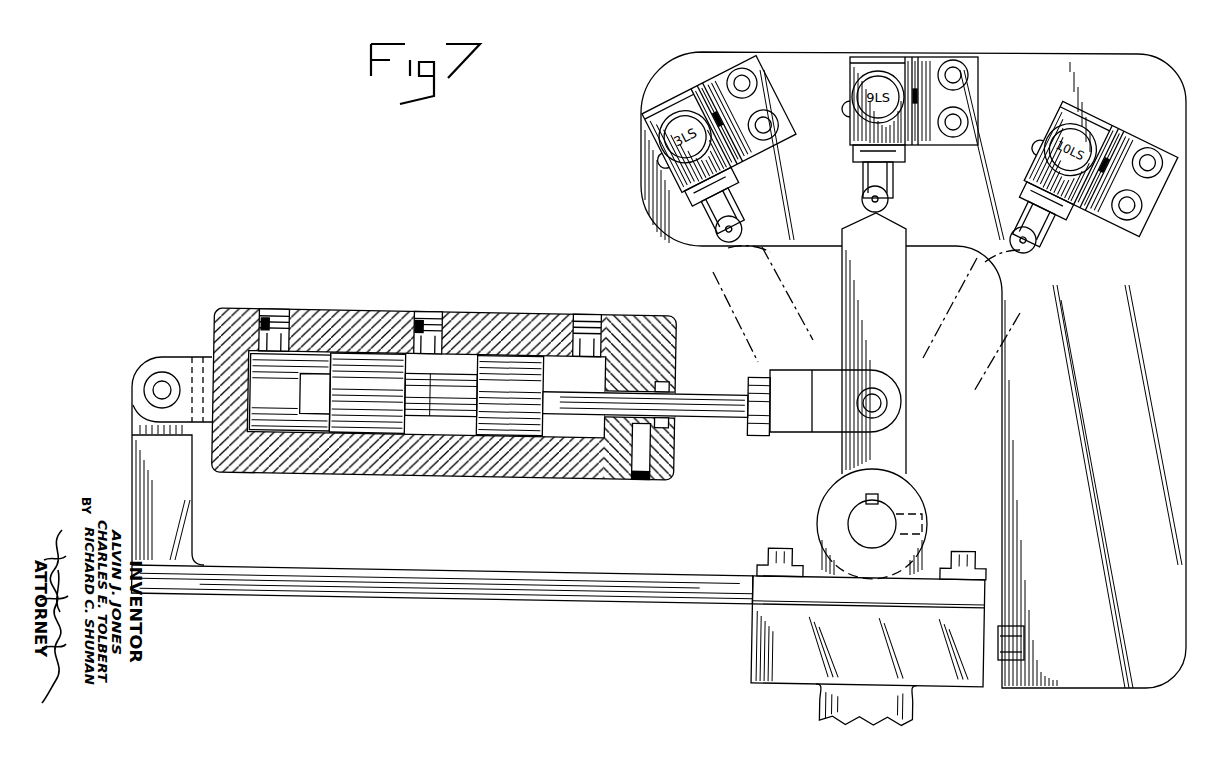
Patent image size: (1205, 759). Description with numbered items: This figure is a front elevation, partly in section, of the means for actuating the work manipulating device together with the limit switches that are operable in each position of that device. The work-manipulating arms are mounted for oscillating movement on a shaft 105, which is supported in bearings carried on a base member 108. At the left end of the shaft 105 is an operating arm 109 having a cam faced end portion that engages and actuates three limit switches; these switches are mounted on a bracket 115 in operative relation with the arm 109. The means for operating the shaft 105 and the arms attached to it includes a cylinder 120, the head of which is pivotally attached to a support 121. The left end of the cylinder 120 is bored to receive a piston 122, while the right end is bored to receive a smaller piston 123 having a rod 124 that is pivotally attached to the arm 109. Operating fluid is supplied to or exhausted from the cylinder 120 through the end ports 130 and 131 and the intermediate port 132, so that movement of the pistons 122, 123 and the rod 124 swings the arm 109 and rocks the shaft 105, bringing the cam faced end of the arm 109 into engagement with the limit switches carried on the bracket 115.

The bracket 115 is at (1090, 58).
The operating arm 109 is at (895, 441).
The shaft 105 is at (855, 523).
The base member 108 is at (780, 648).
The support 121 is at (148, 460).
The cylinder 120 is at (491, 394).
The end port 130 is at (268, 312).
The intermediate port 132 is at (428, 318).
The end port 131 is at (582, 320).
The piston 122 is at (370, 430).
The smaller piston 123 is at (512, 432).
The rod 124 is at (713, 412).